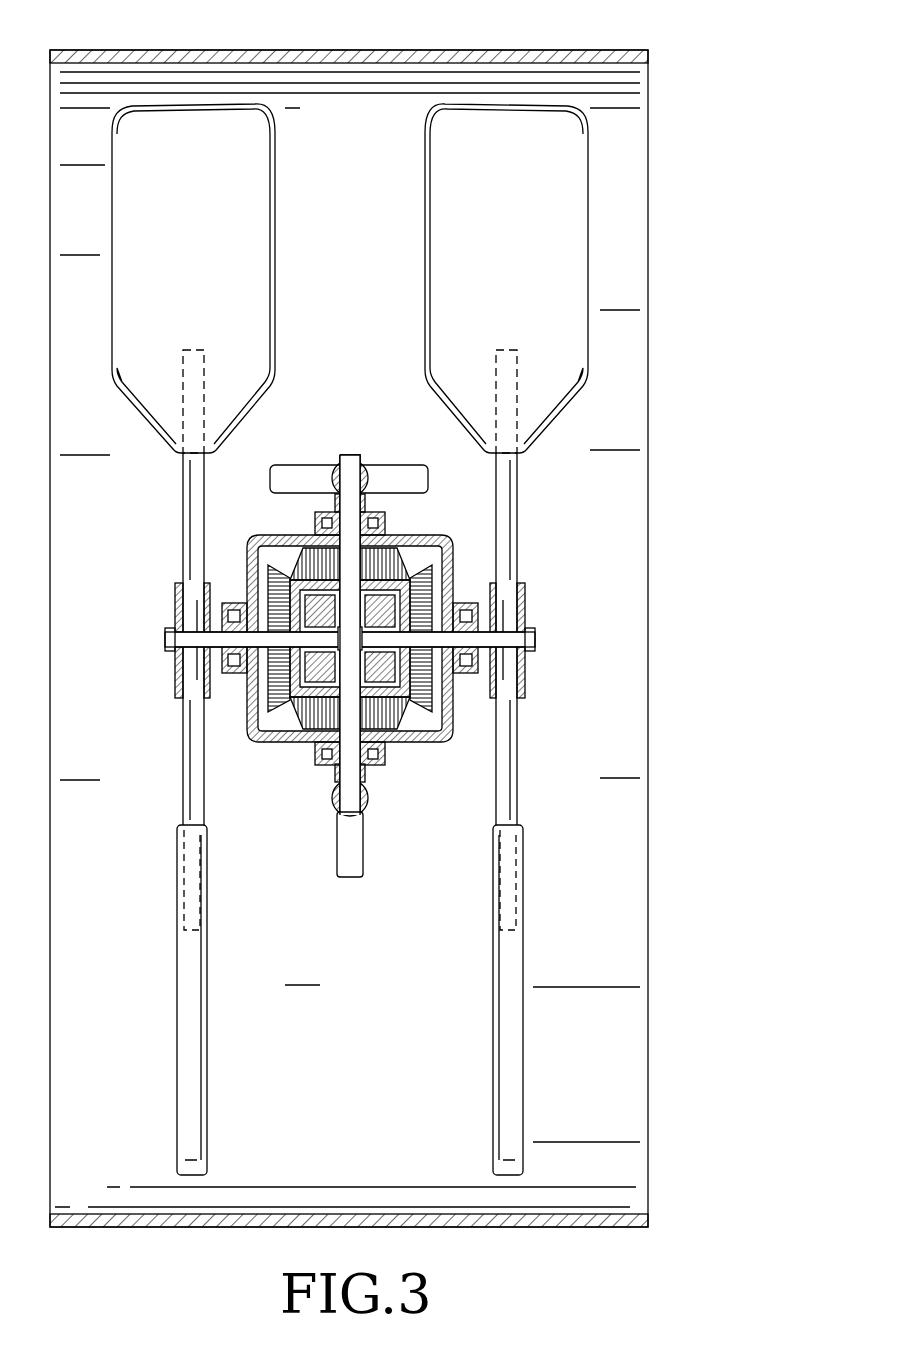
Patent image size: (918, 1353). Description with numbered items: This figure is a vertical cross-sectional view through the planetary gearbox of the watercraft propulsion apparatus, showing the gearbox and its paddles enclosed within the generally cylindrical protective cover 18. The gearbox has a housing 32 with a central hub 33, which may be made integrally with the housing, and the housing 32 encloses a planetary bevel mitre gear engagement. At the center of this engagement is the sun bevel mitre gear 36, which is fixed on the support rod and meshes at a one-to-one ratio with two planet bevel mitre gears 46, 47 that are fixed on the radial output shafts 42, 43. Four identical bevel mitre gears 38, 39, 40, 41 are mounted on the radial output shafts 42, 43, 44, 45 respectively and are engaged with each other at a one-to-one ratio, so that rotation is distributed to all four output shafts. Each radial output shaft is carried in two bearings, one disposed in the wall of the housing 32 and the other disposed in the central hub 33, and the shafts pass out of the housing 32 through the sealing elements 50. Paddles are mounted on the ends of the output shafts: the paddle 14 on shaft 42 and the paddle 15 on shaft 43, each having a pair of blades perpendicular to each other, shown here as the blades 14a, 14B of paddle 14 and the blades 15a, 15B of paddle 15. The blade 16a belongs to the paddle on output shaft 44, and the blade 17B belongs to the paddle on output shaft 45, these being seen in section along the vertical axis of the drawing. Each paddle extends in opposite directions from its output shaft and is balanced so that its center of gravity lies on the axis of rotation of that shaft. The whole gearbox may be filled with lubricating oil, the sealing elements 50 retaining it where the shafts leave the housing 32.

The protective cover 18 is at (358, 56).
The blade of paddle 14B is at (249, 190).
The blade of paddle 15B is at (440, 193).
The paddle 14 is at (185, 765).
The paddle 15 is at (510, 772).
The blade of paddle 14a is at (205, 1093).
The blade of paddle 15a is at (492, 1093).
The blade of paddle 17B is at (302, 485).
The sealing elements 50 is at (368, 503).
The housing 32 is at (257, 545).
The radial output shaft 45 is at (382, 533).
The sun bevel mitre gear 36 is at (400, 563).
The bevel mitre gear 41 is at (435, 568).
The central hub 33 is at (490, 583).
The radial output shaft 42 is at (243, 683).
The radial output shaft 43 is at (465, 677).
The planet bevel mitre gear 46 is at (272, 705).
The bevel mitre gear 38 is at (282, 725).
The radial output shaft 44 is at (398, 748).
The bevel mitre gear 40 is at (328, 745).
The bevel mitre gear 39 is at (420, 745).
The planet bevel mitre gear 47 is at (440, 735).
The blade of paddle 16a is at (360, 850).